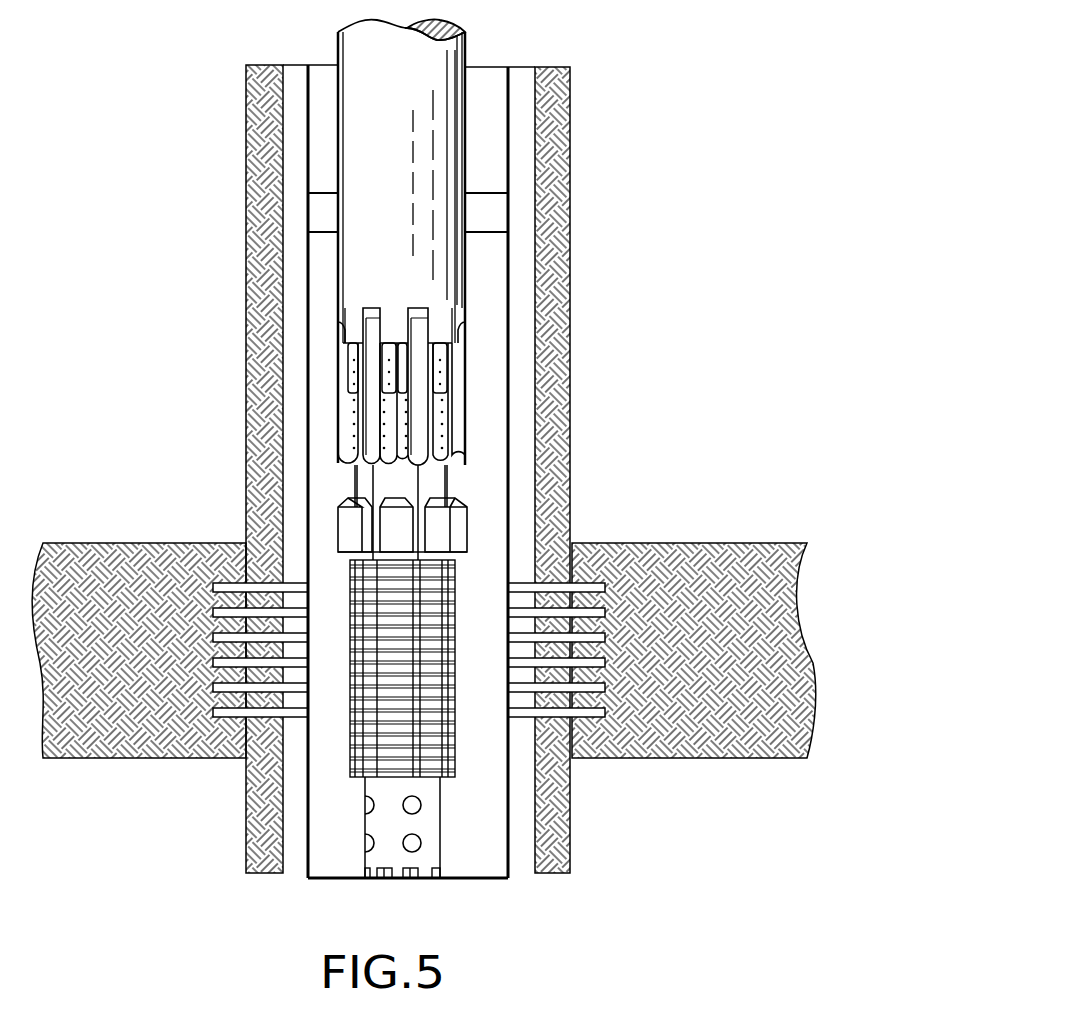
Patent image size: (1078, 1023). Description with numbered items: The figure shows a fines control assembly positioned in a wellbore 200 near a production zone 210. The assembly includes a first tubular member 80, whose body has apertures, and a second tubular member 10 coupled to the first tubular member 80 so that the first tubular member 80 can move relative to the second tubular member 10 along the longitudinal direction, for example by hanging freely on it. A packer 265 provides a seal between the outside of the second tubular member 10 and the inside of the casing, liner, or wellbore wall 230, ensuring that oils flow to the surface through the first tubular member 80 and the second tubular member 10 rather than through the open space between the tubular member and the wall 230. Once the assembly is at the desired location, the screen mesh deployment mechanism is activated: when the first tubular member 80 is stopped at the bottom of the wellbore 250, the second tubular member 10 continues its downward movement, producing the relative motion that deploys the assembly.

The second tubular member 10 is at (372, 153).
The first tubular member 80 is at (377, 820).
The wellbore 200 is at (560, 202).
The production zone 210 is at (698, 645).
The casing, liner, or wellbore wall 230 is at (515, 462).
The bottom of the wellbore 250 is at (463, 878).
The packer 265 is at (317, 215).